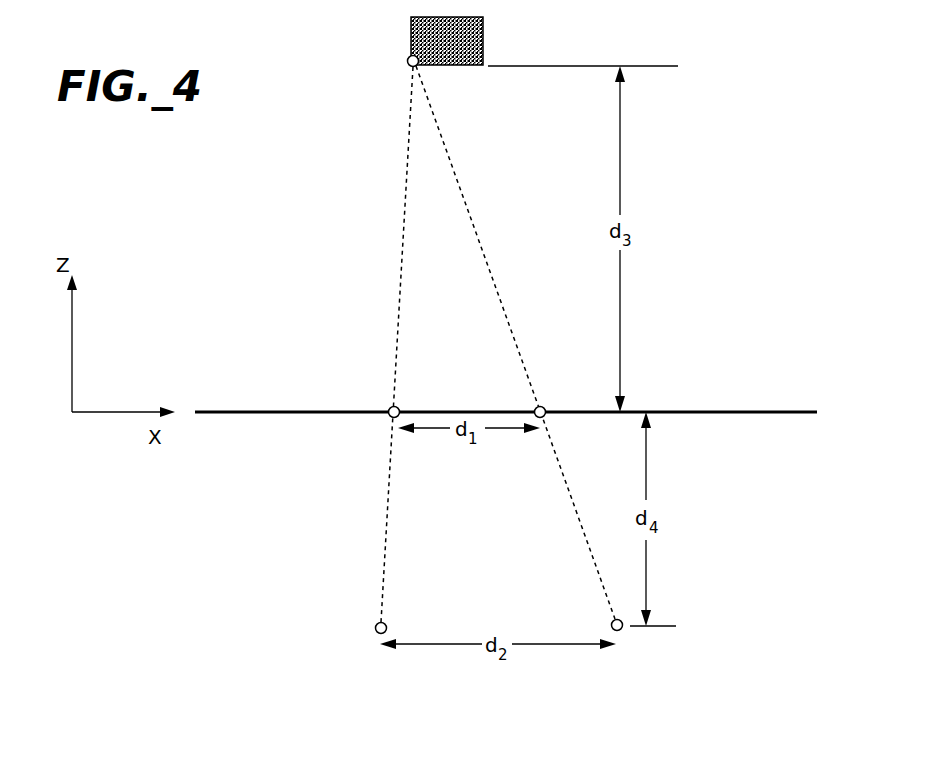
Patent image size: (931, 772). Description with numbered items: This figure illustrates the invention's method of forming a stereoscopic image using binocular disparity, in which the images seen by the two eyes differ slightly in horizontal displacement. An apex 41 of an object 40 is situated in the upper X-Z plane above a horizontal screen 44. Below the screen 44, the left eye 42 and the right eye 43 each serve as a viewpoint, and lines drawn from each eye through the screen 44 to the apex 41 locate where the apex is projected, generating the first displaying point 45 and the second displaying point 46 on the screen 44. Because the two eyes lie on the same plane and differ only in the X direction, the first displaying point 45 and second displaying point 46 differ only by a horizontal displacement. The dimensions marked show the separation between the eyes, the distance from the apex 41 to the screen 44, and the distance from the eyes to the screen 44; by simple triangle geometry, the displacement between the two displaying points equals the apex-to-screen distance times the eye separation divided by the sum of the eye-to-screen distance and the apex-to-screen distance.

The object 40 is at (487, 45).
The apex 41 is at (408, 57).
The left eye 42 is at (376, 623).
The right eye 43 is at (611, 621).
The screen 44 is at (735, 413).
The first displaying point 45 is at (388, 418).
The second displaying point 46 is at (545, 405).